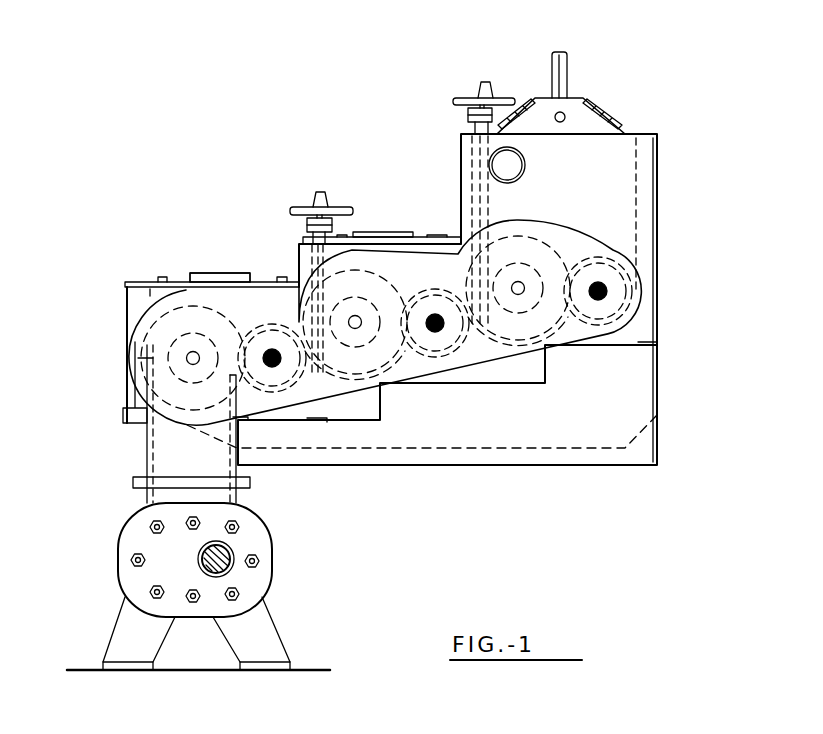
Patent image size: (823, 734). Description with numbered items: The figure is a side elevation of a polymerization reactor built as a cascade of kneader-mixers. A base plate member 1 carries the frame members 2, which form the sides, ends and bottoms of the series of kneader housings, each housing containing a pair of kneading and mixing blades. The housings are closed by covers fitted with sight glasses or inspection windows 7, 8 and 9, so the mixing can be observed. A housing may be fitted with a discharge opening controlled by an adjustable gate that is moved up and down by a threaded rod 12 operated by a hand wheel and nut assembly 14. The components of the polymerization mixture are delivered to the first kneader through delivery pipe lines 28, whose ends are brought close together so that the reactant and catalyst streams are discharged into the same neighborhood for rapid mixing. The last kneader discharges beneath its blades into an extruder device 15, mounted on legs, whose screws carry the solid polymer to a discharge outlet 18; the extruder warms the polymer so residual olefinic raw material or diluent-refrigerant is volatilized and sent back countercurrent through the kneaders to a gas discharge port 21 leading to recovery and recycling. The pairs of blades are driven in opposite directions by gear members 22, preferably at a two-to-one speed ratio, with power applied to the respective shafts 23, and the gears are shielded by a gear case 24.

The base plate member 1 is at (447, 466).
The frame members 2 is at (653, 160).
The sight glass 7 is at (516, 99).
The sight glass 8 is at (380, 234).
The sight glass 9 is at (200, 277).
The threaded rod 12 is at (472, 180).
The hand wheel and nut assembly 14 is at (460, 99).
The extruder device 15 is at (270, 543).
The discharge outlet 18 is at (200, 558).
The gas discharge port 21 is at (527, 164).
The gear members 22 is at (276, 332).
The shafts 23 is at (435, 314).
The gear case 24 is at (355, 397).
The delivery pipe lines 28 is at (558, 48).